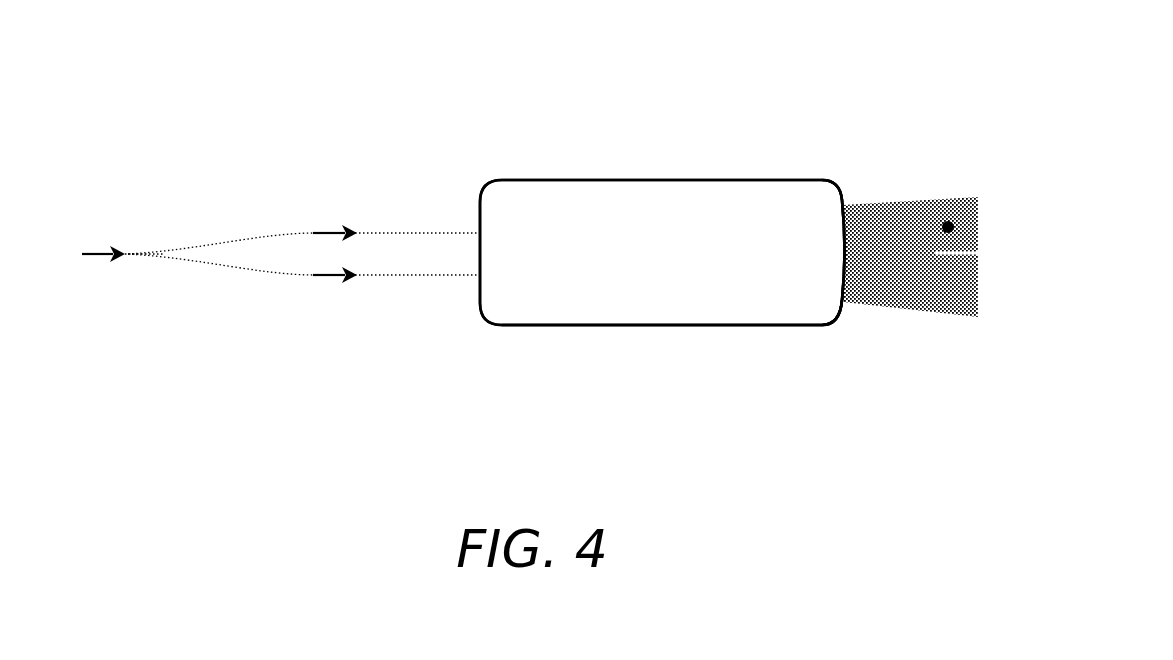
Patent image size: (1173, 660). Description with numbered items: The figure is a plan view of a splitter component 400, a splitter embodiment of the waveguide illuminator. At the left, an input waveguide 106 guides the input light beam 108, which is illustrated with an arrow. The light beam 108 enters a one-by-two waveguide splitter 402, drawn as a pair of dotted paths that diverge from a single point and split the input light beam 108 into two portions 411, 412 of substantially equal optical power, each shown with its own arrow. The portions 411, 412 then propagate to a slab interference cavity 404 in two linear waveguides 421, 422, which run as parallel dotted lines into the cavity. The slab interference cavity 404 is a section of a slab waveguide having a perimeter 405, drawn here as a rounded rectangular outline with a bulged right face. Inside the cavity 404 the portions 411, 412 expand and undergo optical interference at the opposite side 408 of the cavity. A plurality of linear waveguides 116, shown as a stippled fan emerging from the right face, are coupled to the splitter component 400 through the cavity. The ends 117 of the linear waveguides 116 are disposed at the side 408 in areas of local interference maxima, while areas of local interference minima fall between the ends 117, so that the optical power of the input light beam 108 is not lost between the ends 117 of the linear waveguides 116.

The splitter component 400 is at (711, 112).
The slab interference cavity 404 is at (690, 260).
The perimeter 405 is at (668, 327).
The opposite side 408 is at (848, 196).
The ends 117 is at (850, 290).
The linear waveguides 116 is at (948, 222).
The light beam 108 is at (92, 258).
The input waveguide 106 is at (137, 254).
The 1×2 waveguide splitter 402 is at (200, 302).
The first portion 411 is at (334, 231).
The second portion 412 is at (331, 278).
The first linear waveguide 421 is at (436, 231).
The second linear waveguide 422 is at (436, 278).